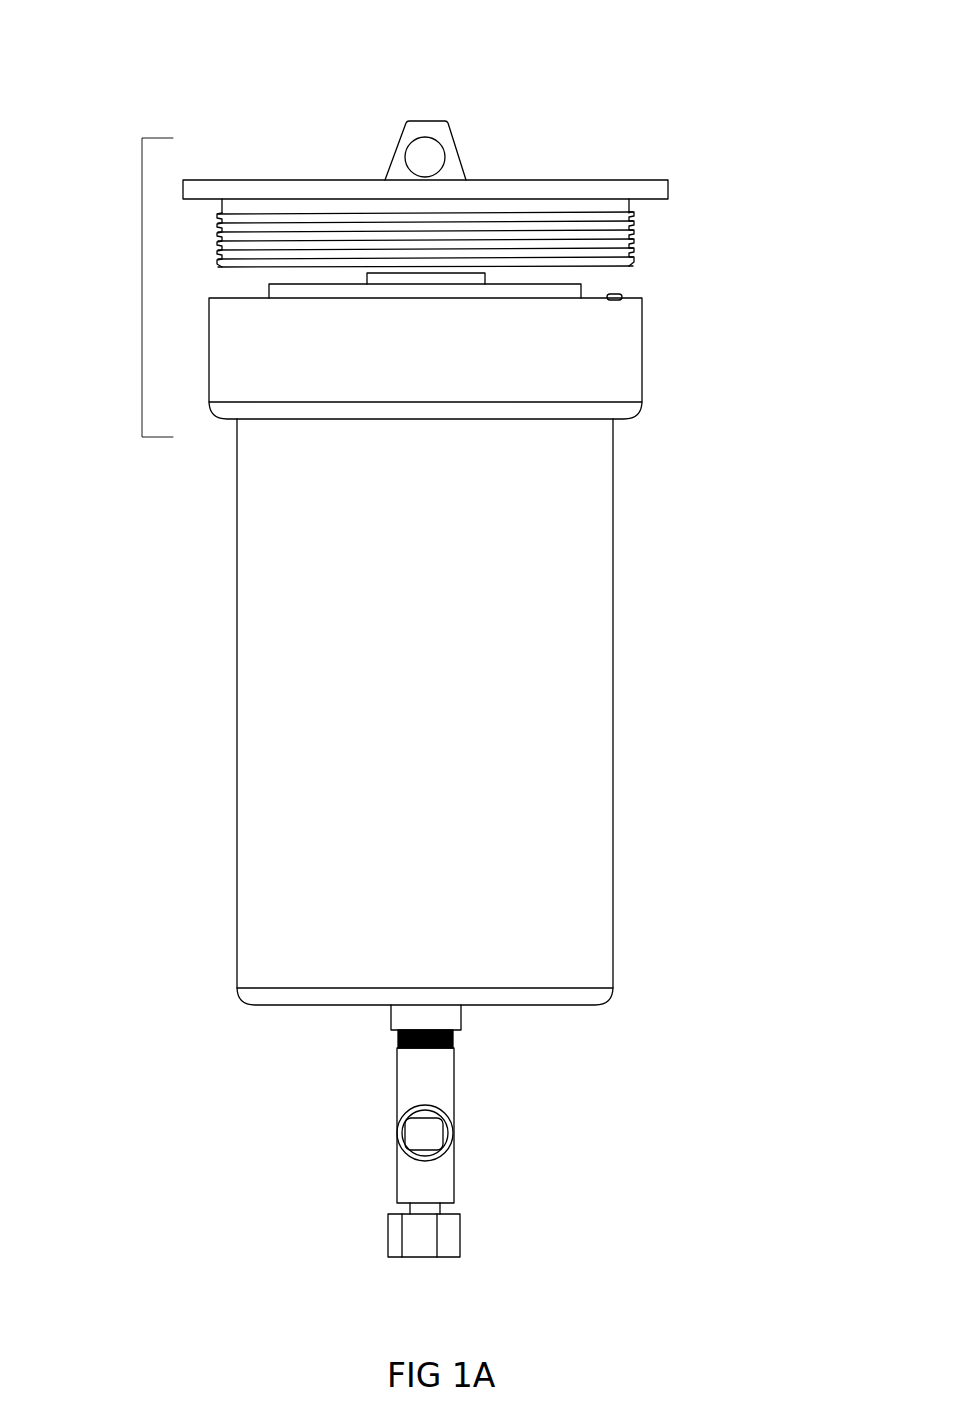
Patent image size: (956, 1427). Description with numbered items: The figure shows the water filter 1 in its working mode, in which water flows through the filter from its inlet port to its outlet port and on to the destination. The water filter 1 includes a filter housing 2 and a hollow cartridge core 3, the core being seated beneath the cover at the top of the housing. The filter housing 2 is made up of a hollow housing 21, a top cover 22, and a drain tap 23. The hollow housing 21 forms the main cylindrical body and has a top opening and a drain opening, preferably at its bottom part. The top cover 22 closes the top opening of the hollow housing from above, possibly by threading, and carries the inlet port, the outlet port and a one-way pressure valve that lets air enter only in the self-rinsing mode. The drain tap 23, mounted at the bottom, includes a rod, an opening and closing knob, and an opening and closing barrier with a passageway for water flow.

The water filter 1 is at (692, 136).
The filter housing 2 is at (272, 600).
The hollow housing 21 is at (272, 807).
The top cover 22 is at (495, 198).
The drain tap 23 is at (433, 1087).
The hollow cartridge core 3 is at (537, 293).